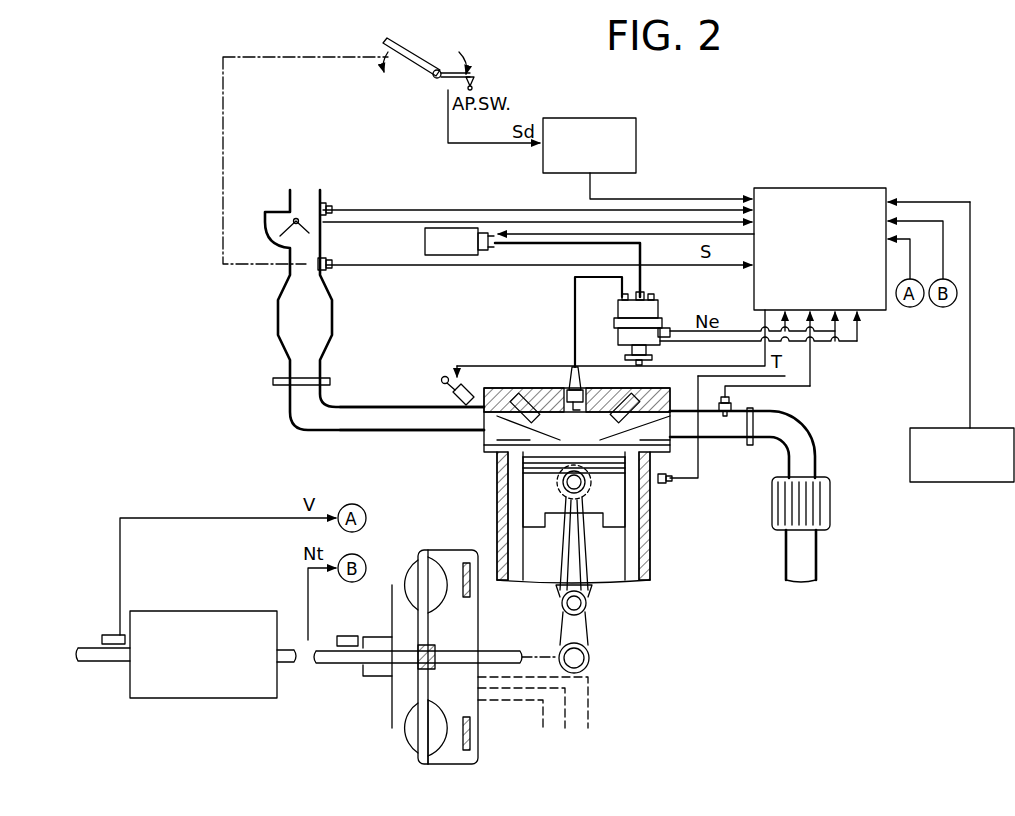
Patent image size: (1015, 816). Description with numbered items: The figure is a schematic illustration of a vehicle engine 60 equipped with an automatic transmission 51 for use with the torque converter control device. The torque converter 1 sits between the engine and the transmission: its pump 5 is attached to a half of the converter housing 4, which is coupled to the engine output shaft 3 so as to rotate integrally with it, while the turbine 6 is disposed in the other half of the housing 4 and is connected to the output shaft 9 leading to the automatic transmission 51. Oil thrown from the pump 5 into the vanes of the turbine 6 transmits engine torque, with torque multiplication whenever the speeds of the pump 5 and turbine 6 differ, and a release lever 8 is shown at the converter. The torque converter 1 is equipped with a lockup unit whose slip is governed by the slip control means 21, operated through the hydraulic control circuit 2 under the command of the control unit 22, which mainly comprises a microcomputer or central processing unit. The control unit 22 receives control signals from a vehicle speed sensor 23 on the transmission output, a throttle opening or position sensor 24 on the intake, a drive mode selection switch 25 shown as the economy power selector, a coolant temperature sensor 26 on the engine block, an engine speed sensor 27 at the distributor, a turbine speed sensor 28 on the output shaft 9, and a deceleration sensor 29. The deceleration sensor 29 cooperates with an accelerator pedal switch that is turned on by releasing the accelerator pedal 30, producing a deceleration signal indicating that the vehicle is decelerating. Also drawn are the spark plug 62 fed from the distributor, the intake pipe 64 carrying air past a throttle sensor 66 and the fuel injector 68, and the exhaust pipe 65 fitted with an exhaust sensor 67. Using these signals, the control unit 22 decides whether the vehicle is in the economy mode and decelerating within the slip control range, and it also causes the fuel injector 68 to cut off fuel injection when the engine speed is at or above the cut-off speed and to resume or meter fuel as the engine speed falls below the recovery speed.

The torque converter 1 is at (412, 763).
The hydraulic control circuit 2 is at (596, 732).
The engine output shaft 3 is at (500, 652).
The converter housing 4 is at (474, 766).
The pump 5 is at (398, 730).
The turbine 6 is at (437, 750).
The release lever 8 is at (465, 703).
The output shaft 9 is at (333, 665).
The slip control means 21 is at (580, 758).
The control unit 22 is at (825, 188).
The vehicle speed sensor 23 is at (104, 630).
The throttle opening sensor 24 is at (322, 279).
The drive mode selection switch 25 is at (968, 484).
The coolant temperature sensor 26 is at (670, 482).
The engine speed sensor 27 is at (662, 322).
The turbine speed sensor 28 is at (348, 636).
The deceleration sensor 29 is at (637, 136).
The accelerator pedal 30 is at (393, 50).
The automatic transmission 51 is at (220, 698).
The engine 60 is at (490, 500).
The spark plug 62 is at (622, 298).
The intake pipe 64 is at (368, 405).
The exhaust pipe 65 is at (728, 440).
The throttle sensor 66 is at (328, 203).
The oxygen sensor 67 is at (735, 404).
The fuel injector 68 is at (445, 378).